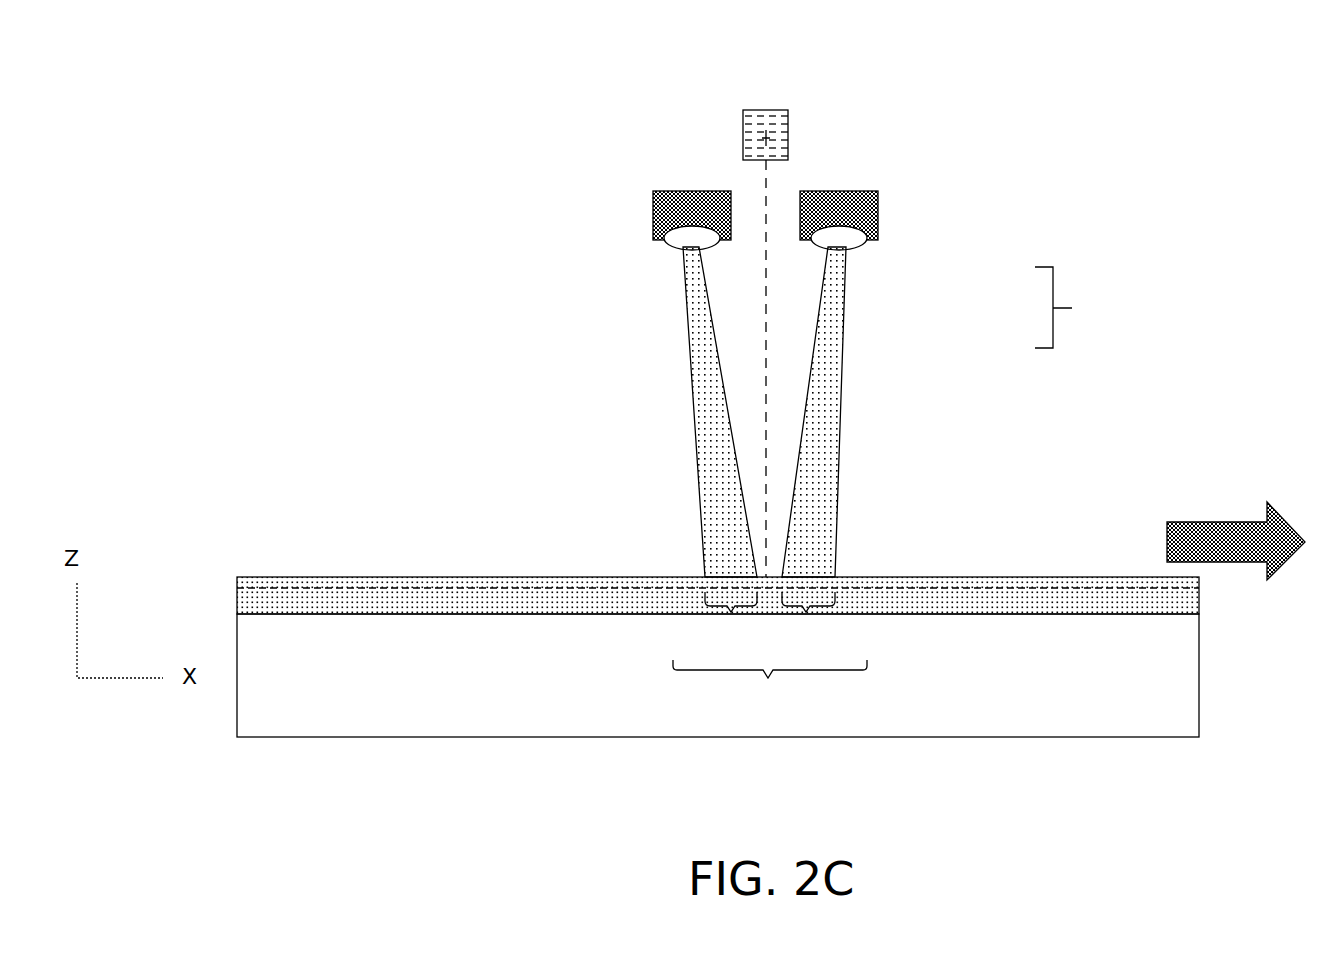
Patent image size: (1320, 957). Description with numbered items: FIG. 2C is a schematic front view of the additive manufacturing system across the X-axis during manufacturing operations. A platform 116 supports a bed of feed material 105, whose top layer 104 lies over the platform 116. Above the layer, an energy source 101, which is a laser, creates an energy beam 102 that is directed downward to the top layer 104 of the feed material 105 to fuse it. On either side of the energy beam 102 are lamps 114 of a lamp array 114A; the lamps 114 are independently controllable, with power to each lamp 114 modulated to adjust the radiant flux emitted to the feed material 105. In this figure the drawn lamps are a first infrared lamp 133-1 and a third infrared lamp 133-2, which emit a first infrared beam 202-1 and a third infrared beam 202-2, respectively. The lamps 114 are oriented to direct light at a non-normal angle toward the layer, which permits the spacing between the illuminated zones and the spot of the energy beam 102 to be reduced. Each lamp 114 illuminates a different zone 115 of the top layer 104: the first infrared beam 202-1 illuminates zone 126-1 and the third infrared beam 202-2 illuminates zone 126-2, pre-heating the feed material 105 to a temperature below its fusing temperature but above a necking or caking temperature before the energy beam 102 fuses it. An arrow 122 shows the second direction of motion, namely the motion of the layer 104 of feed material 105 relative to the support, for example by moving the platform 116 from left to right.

The energy source 101 is at (772, 115).
The energy beam 102 is at (767, 180).
The top layer 104 is at (1045, 585).
The feed material 105 is at (512, 608).
The lamp 114 is at (1086, 307).
The lamp array 114A is at (632, 213).
The zone 115 is at (770, 690).
The platform 116 is at (898, 687).
The second direction of motion 122 is at (1242, 543).
The zone 126-1 is at (720, 625).
The zone 126-2 is at (810, 625).
The first infrared lamp 133-1 is at (697, 247).
The third infrared lamp 133-2 is at (862, 243).
The first infrared beam 202-1 is at (700, 400).
The third infrared beam 202-2 is at (823, 420).